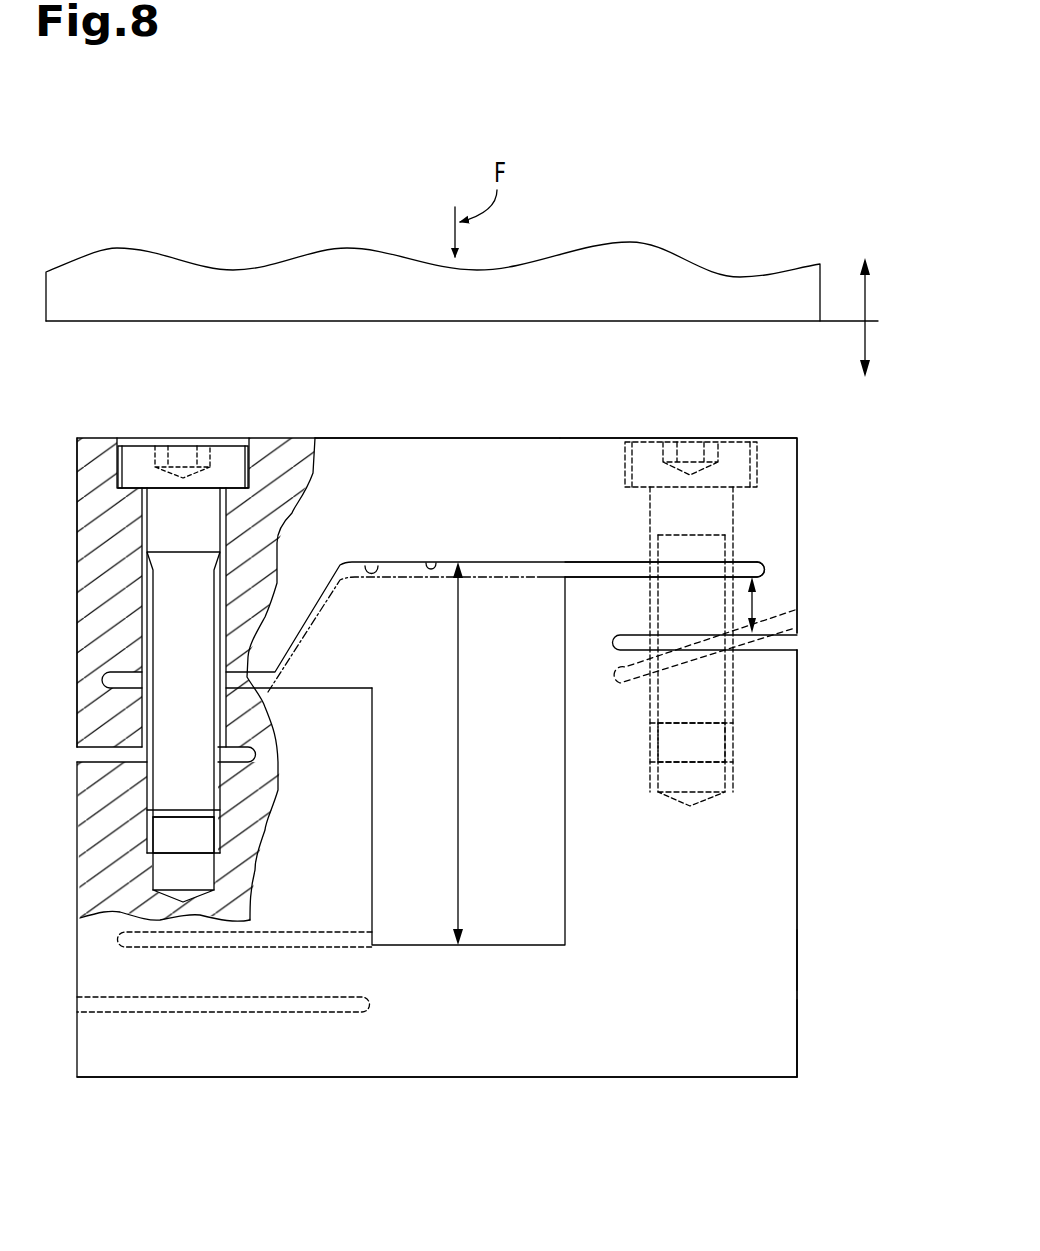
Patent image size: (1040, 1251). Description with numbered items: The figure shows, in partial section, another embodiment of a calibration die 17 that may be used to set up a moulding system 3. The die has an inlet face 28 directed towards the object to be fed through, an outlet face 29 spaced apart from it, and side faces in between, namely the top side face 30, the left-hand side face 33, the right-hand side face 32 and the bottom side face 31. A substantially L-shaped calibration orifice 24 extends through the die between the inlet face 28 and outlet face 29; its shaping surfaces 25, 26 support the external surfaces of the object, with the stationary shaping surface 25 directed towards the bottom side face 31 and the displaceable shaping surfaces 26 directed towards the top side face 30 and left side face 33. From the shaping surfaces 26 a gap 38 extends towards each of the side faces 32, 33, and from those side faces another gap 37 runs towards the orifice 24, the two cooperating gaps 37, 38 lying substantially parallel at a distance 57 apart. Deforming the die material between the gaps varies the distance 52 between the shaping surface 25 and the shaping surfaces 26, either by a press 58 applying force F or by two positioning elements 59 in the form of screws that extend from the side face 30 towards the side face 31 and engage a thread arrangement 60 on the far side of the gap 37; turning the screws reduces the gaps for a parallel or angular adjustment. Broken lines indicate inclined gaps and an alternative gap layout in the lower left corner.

The moulding system 3 is at (702, 78).
The press 58 is at (93, 275).
The positioning element 59 is at (170, 513).
The thread arrangement 60 is at (137, 833).
The shaping surface 26 is at (348, 560).
The side face 30 is at (360, 426).
The calibration orifice 24 is at (497, 596).
The calibration die 17 is at (778, 452).
The side face 33 is at (72, 534).
The gap 38 is at (254, 676).
The gap 37 is at (83, 749).
The distance 52 is at (456, 790).
The distance 57 is at (760, 600).
The side face 32 is at (805, 808).
The shaping surface 25 is at (560, 877).
The outlet face 29 is at (712, 960).
The inlet face 28 is at (700, 998).
The side face 31 is at (548, 1088).